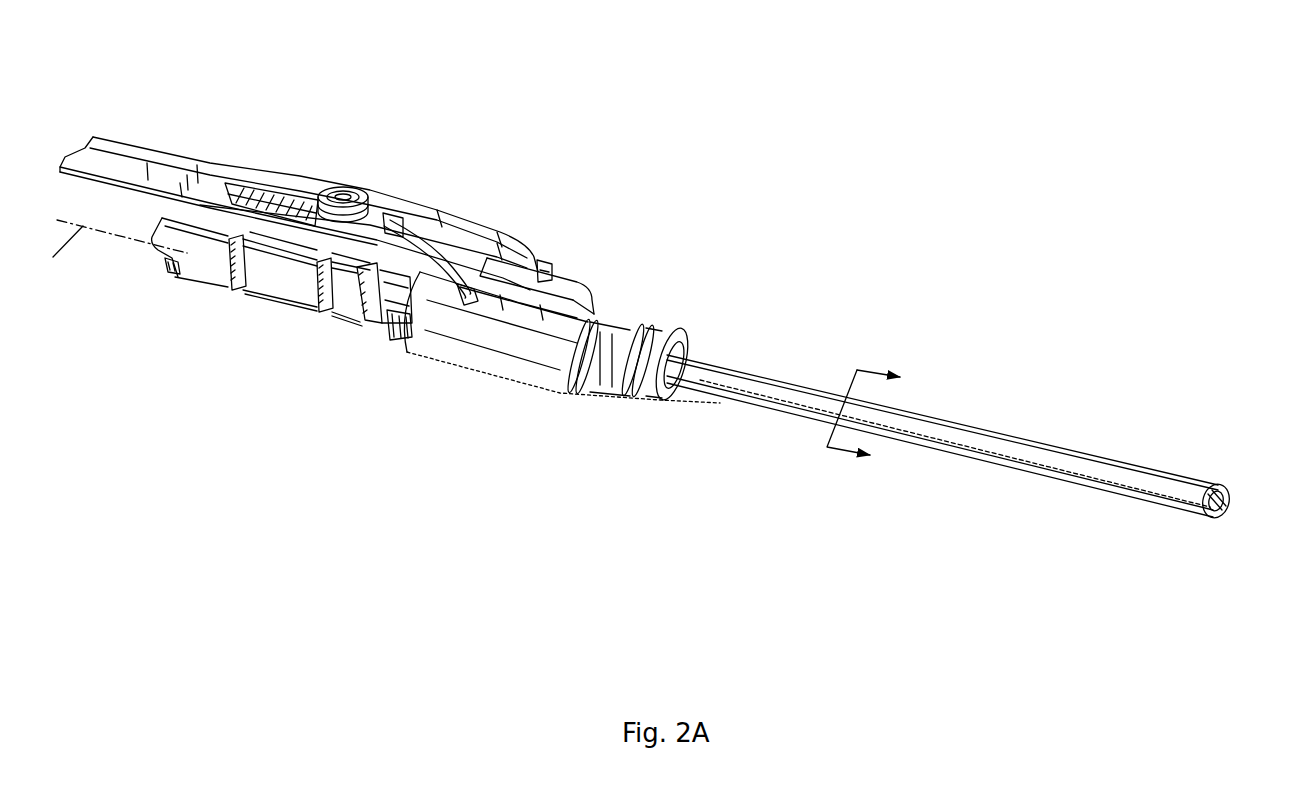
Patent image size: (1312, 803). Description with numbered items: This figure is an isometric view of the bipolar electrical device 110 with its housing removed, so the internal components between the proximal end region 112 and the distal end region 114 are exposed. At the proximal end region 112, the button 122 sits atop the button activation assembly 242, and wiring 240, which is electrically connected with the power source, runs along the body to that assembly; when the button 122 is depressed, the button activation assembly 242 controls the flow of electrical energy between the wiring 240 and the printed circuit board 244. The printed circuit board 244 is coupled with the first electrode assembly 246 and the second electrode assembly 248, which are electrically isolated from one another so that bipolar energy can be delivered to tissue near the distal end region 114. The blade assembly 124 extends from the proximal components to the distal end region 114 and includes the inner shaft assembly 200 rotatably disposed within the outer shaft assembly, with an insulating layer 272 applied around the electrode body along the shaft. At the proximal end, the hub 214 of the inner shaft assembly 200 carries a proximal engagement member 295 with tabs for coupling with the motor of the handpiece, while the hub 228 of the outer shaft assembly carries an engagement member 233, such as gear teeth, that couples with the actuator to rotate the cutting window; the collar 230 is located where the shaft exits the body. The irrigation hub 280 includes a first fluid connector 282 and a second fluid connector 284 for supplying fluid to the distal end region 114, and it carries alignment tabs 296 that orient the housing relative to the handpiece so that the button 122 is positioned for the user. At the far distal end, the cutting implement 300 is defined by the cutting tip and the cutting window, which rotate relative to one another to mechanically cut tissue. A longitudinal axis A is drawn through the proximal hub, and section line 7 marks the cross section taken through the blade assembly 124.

The bipolar electrical device 110 is at (930, 46).
The proximal end region 112 is at (256, 125).
The distal end region 114 is at (1222, 450).
The button 122 is at (343, 200).
The blade assembly 124 is at (975, 397).
The inner shaft assembly 200 is at (256, 295).
The hub 214 is at (218, 260).
The hub 228 is at (390, 308).
The collar 230 is at (684, 338).
The engagement member 233 is at (366, 287).
The wiring 240 is at (220, 190).
The button activation assembly 242 is at (388, 212).
The printed circuit board 244 is at (578, 312).
The first electrode assembly 246 is at (595, 395).
The second electrode assembly 248 is at (638, 402).
The insulating layer 272 is at (1035, 452).
The irrigation hub 280 is at (500, 362).
The first fluid connector 282 is at (465, 292).
The second fluid connector 284 is at (543, 268).
The proximal engagement member 295 is at (160, 264).
The alignment tabs 296 is at (398, 335).
The cutting implement 300 is at (1227, 484).
The section line 7- 7 is at (871, 424).
The axis A is at (112, 251).